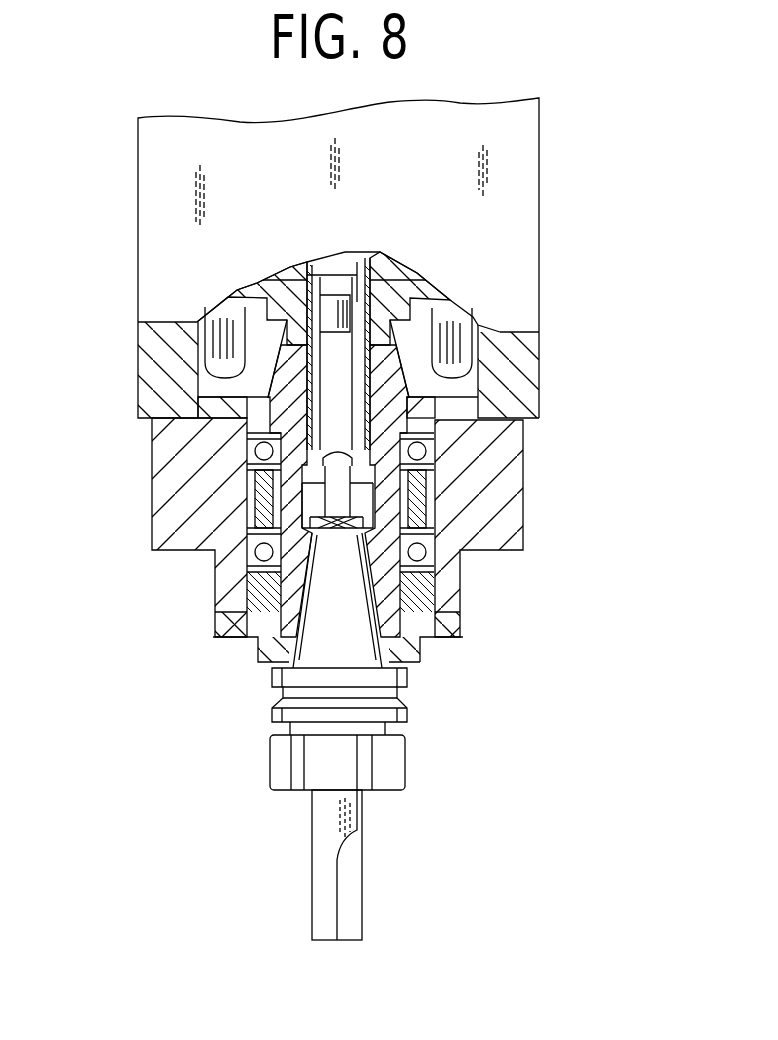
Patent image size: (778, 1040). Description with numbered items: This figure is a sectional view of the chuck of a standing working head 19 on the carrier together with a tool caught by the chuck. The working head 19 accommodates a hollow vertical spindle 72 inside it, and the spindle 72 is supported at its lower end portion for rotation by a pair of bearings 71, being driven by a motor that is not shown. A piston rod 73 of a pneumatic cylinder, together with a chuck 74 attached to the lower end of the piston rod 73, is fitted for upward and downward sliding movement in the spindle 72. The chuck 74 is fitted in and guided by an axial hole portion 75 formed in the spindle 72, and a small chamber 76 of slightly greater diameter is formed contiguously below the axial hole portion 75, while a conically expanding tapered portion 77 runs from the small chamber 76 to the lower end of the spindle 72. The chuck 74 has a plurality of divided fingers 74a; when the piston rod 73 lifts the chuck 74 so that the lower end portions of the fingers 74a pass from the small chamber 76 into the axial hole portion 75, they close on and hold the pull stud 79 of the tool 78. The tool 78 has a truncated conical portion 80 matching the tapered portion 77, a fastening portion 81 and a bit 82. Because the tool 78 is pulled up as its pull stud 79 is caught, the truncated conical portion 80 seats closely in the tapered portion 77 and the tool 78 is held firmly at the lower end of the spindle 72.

The working head 19 is at (516, 159).
The bearings 71 is at (262, 456).
The spindle 72 is at (382, 386).
The piston rod 73 is at (357, 250).
The chuck 74 is at (434, 340).
The fingers 74a is at (598, 400).
The axial hole portion 75 is at (322, 354).
The small chamber 76 is at (365, 495).
The tapered portion 77 is at (258, 632).
The tool 78 is at (407, 760).
The pull stud 79 is at (327, 440).
The truncated conical portion 80 is at (340, 645).
The fastening portion 81 is at (287, 694).
The bit 82 is at (320, 822).